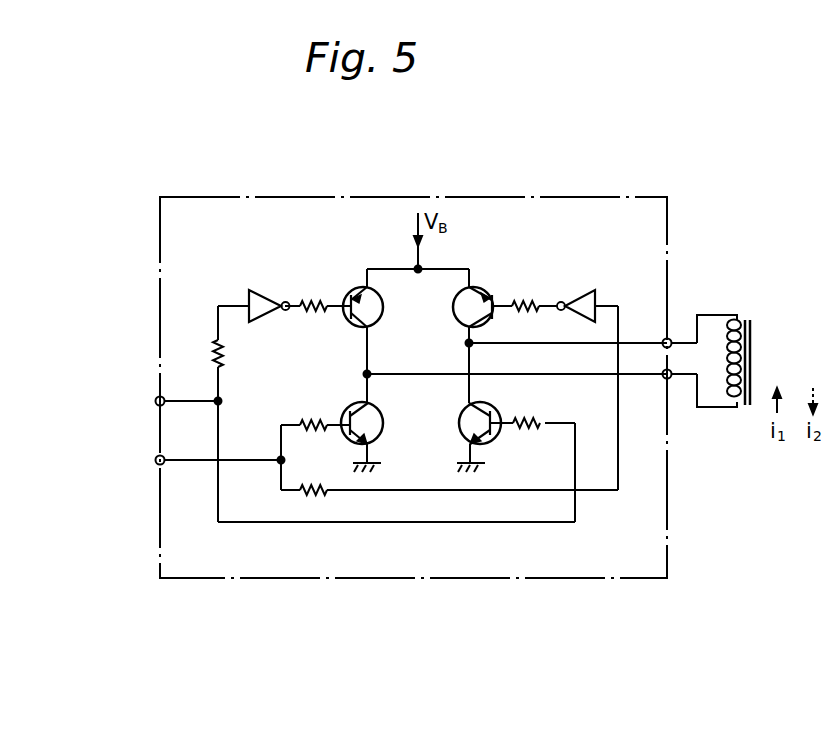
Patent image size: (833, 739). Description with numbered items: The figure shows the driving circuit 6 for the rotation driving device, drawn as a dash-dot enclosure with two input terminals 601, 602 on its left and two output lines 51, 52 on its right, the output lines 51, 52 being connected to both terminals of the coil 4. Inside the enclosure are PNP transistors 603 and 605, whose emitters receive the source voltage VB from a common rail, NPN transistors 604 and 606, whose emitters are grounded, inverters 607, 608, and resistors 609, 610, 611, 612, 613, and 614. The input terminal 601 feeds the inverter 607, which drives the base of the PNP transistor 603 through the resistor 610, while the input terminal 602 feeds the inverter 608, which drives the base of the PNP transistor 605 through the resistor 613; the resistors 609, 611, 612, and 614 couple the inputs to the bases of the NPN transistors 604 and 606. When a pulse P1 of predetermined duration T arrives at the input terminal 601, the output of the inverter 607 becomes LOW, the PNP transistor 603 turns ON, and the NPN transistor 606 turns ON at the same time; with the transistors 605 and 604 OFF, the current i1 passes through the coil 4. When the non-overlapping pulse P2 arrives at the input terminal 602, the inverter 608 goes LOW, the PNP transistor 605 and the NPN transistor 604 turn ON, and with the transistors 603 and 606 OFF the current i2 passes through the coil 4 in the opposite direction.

The driving circuit 6 is at (513, 195).
The input terminal 601 is at (156, 400).
The input terminal 602 is at (156, 460).
The PNP transistor 603 is at (383, 316).
The NPN transistor 604 is at (377, 417).
The PNP transistor 605 is at (463, 323).
The NPN transistor 606 is at (461, 436).
The inverter 607 is at (262, 290).
The inverter 608 is at (590, 290).
The resistor 609 is at (224, 352).
The resistor 610 is at (313, 312).
The resistor 611 is at (310, 418).
The resistor 612 is at (316, 496).
The resistor 613 is at (530, 300).
The resistor 614 is at (532, 430).
The output line 51 is at (680, 340).
The output line 52 is at (682, 380).
The coil 4 is at (757, 360).